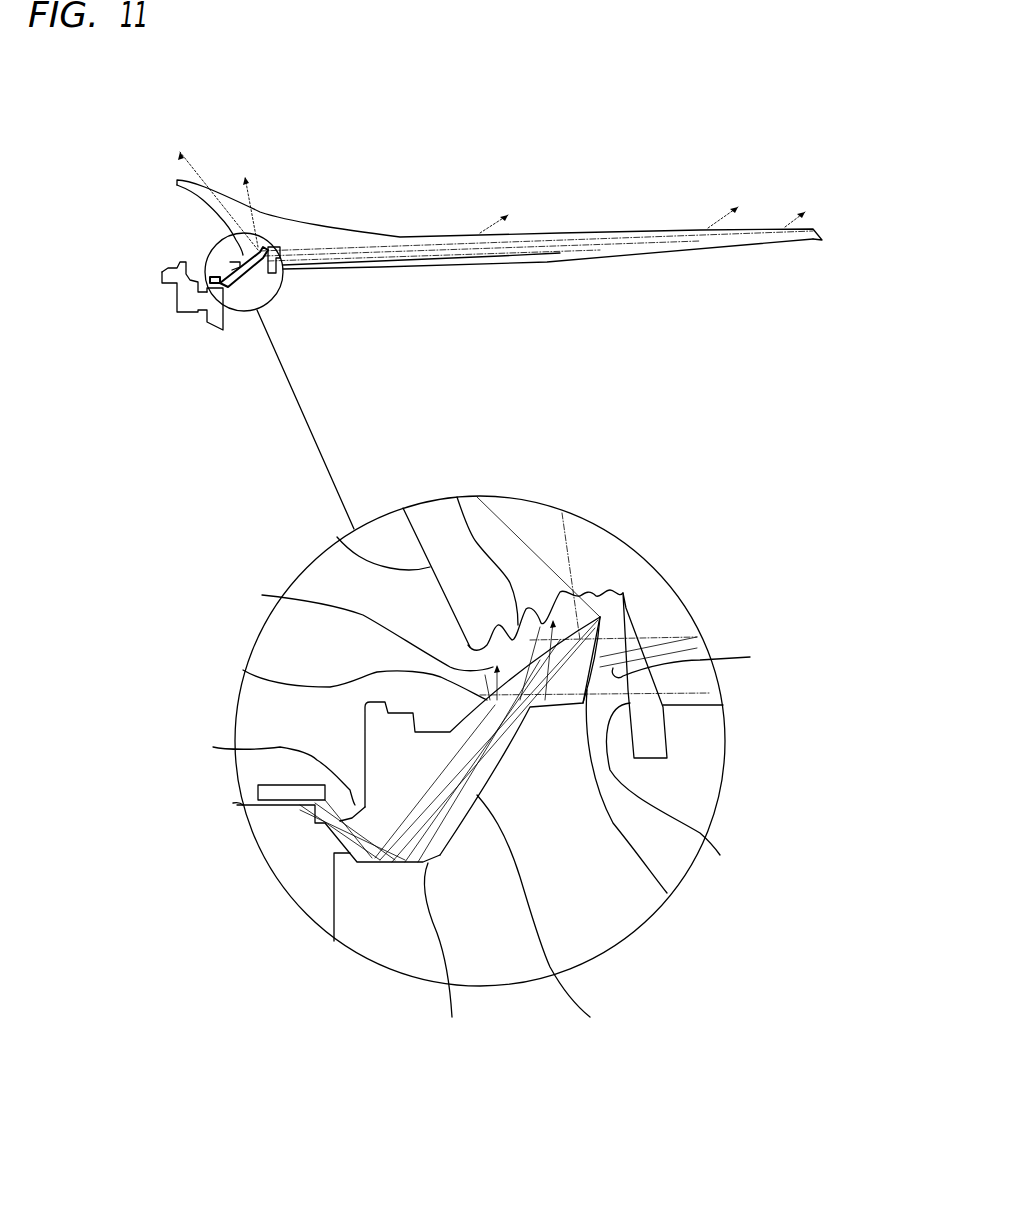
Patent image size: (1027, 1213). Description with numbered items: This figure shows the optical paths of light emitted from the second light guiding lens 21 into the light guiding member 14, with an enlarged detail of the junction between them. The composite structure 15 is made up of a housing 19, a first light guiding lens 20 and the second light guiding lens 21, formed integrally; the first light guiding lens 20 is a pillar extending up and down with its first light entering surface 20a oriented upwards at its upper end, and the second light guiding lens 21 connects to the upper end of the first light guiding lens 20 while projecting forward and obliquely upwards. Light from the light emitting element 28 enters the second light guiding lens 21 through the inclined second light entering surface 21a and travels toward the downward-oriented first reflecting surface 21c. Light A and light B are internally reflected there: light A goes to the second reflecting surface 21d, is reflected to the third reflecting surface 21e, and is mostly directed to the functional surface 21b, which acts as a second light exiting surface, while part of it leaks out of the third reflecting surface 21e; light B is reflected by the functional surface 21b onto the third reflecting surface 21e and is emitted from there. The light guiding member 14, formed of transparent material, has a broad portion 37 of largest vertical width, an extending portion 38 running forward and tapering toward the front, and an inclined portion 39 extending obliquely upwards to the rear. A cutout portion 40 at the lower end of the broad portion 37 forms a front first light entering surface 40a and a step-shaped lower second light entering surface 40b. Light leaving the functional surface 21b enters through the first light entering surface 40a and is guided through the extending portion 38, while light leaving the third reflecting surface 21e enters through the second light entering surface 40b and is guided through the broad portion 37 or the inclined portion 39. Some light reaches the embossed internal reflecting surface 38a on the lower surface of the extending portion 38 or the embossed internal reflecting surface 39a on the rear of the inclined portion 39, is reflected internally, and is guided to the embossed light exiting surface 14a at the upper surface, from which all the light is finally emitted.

The light guiding member 14 is at (303, 228).
The light exiting surface 14a is at (410, 233).
The composite structure 15 is at (162, 267).
The housing 19 is at (177, 263).
The first light guiding lens 20 is at (217, 322).
The first light entering surface 20a is at (233, 803).
The second light guiding lens 21 is at (230, 263).
The second light entering surface 21a is at (213, 747).
The functional surface 21b is at (600, 633).
The first reflecting surface 21c is at (446, 956).
The second reflecting surface 21d is at (553, 913).
The third reflecting surface 21e is at (243, 670).
The light emitting element 28 is at (260, 786).
The broad portion 37 is at (277, 220).
The extending portion 38 is at (557, 232).
The internal reflecting surface 38a is at (470, 267).
The inclined portion 39 is at (177, 180).
The internal reflecting surface 39a is at (197, 199).
The cutout portion 40 is at (720, 855).
The first light entering surface 40a is at (644, 666).
The second light entering surface 40b is at (357, 626).
The light A is at (667, 893).
The light B is at (457, 497).